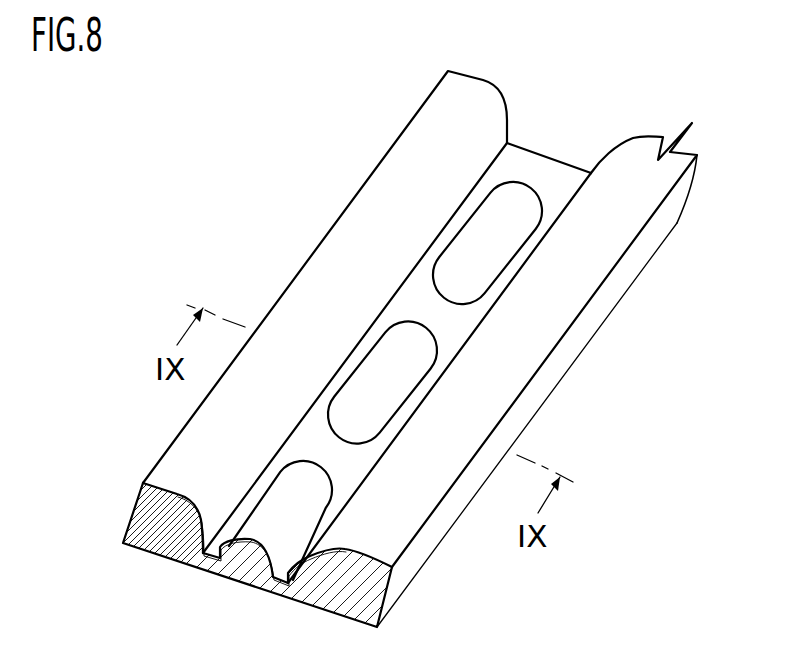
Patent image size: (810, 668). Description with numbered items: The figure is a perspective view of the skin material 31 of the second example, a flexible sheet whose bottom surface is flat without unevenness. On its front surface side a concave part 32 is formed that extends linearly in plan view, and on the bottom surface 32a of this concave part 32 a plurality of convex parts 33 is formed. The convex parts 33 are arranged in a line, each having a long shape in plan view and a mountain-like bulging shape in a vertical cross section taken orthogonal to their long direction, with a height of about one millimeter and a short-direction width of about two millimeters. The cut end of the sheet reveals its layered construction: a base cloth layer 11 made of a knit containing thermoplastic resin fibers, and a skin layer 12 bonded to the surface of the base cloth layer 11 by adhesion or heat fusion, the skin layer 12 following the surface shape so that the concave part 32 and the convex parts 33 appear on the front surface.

The base cloth layer 11 is at (136, 507).
The skin layer 12 is at (186, 472).
The skin material 31 is at (360, 161).
The concave part 32 is at (465, 320).
The bottom surface 32a is at (565, 180).
The convex part 33 is at (483, 222).